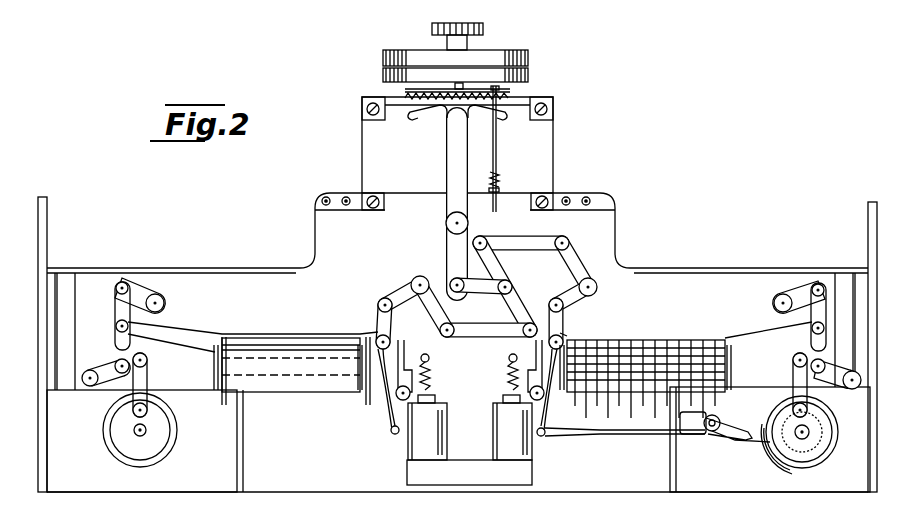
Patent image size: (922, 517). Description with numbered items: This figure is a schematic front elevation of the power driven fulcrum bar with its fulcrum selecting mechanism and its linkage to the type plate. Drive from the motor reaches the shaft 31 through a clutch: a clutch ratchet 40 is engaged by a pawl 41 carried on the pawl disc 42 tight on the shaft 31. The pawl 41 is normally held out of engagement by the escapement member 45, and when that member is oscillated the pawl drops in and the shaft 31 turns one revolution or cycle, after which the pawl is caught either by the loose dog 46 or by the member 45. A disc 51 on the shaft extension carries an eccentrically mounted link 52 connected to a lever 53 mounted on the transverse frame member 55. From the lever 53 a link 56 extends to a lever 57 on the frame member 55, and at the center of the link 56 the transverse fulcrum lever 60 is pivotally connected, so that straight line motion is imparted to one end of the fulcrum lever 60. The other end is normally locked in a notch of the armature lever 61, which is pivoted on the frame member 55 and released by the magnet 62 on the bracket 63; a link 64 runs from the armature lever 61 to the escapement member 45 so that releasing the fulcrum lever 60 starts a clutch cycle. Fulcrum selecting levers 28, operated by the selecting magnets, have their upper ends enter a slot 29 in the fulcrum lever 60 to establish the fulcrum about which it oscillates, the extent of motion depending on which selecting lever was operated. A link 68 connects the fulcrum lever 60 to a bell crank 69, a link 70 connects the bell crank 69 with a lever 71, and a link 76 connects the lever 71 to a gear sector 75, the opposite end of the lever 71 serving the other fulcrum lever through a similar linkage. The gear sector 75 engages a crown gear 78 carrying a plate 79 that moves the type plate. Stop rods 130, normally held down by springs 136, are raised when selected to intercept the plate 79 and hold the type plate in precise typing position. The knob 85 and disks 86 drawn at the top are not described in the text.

The fulcrum selecting lever 28 is at (216, 400).
The slot 29 is at (305, 337).
The shaft 31 is at (144, 436).
The clutch ratchet 40 is at (822, 418).
The pawl 41 is at (778, 460).
The pawl disc 42 is at (104, 432).
The escapement member 45 is at (742, 440).
The loose dog 46 is at (738, 428).
The disc 51 is at (133, 448).
The link 52 is at (148, 370).
The lever 53 is at (110, 385).
The transverse frame member 55 is at (697, 275).
The link 56 is at (116, 304).
The lever 57 is at (135, 285).
The fulcrum lever 60 is at (268, 336).
The armature lever 61 is at (395, 390).
The magnet 62 is at (408, 450).
The bracket 63 is at (458, 462).
The link 64 is at (604, 436).
The link 68 is at (378, 316).
The bell crank 69 is at (398, 290).
The link 70 is at (517, 238).
The lever 71 is at (518, 298).
The gear sector 75 is at (437, 110).
The link 76 is at (481, 290).
The crown gear 78 is at (510, 90).
The plate 79 is at (445, 92).
The knob 85 is at (484, 50).
The dial disk 86 is at (529, 68).
The stop rod 130 is at (497, 155).
The spring 136 is at (499, 182).